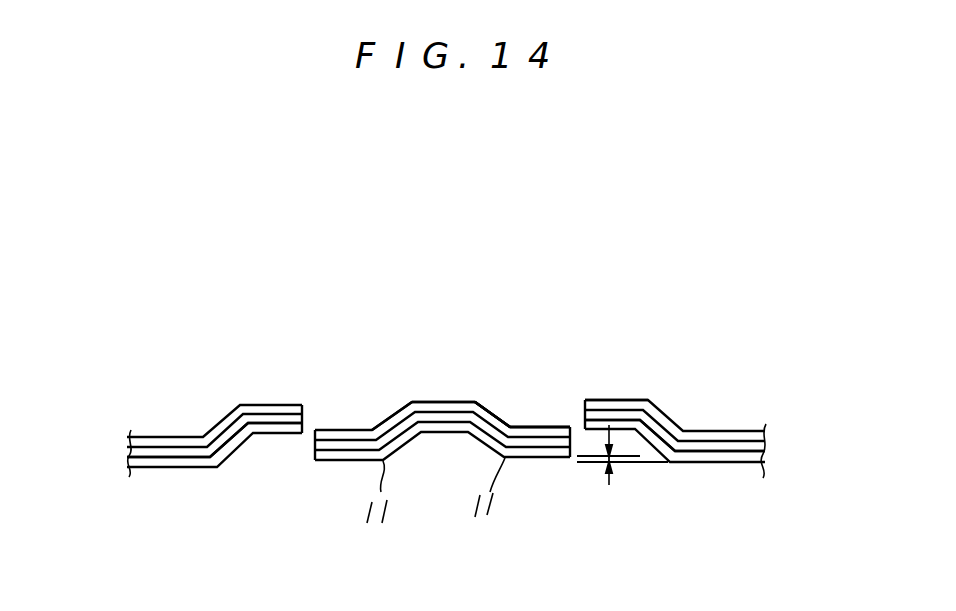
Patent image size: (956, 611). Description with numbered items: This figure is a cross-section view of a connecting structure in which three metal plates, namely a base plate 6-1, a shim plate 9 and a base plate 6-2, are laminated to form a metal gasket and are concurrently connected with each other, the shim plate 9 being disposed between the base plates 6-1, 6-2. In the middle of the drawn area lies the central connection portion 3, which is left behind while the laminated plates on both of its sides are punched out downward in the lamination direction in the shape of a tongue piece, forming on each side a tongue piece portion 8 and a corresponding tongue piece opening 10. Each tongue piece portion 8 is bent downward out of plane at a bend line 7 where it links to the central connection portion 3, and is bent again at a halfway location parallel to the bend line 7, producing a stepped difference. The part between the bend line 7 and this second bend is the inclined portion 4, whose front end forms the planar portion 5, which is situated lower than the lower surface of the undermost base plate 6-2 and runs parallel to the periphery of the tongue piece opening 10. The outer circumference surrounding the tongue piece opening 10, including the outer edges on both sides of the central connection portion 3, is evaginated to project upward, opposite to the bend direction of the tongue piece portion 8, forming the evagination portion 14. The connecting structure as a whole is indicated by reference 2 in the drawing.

The laminated strip member 2 is at (487, 318).
The central connection portion 3 is at (437, 402).
The inclined portion 4 is at (509, 424).
The planar portion 5 is at (557, 426).
The base plate 6-1 is at (162, 443).
The base plate 6-2 is at (150, 468).
The bend line 7 is at (412, 402).
The tongue piece portion 8 is at (560, 341).
The shim plate 9 is at (198, 456).
The tongue piece opening 10 is at (302, 406).
The evagination portion 14 is at (625, 400).